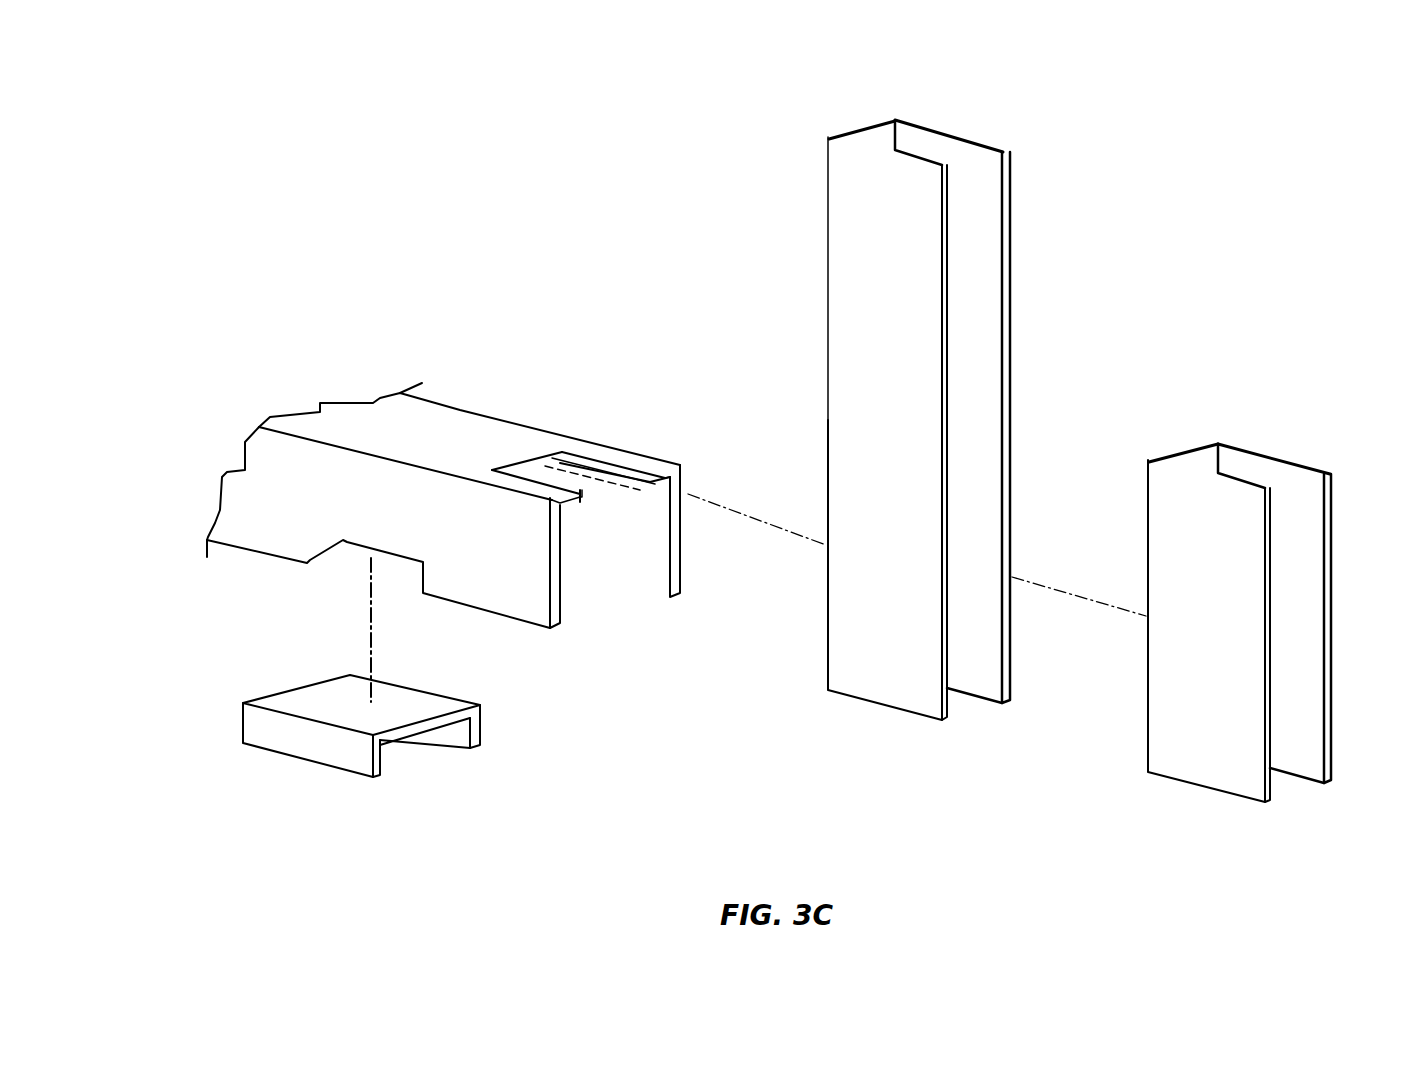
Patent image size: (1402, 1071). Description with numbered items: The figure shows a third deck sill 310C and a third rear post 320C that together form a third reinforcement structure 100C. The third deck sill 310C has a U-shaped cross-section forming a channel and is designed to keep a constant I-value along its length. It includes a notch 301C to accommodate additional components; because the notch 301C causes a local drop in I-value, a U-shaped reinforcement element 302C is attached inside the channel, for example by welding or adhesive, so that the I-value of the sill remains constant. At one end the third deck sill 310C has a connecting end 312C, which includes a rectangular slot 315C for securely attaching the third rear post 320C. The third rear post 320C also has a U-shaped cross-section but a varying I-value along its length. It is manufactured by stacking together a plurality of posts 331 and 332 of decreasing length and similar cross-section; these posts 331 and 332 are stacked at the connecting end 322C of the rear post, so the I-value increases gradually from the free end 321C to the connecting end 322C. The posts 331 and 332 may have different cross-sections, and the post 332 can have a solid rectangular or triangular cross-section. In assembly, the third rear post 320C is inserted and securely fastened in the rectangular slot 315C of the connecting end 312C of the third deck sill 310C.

The third reinforcement structure 100C is at (413, 181).
The third deck sill 310C is at (273, 517).
The connecting end 312C is at (638, 462).
The rectangular slot 315C is at (540, 482).
The notch 301C is at (347, 553).
The U-shaped reinforcement element 302C is at (332, 752).
The third rear post 320C is at (985, 97).
The free end 321C is at (826, 147).
The connecting end 322C is at (822, 668).
The post 331 is at (1017, 333).
The post 332 is at (1278, 440).